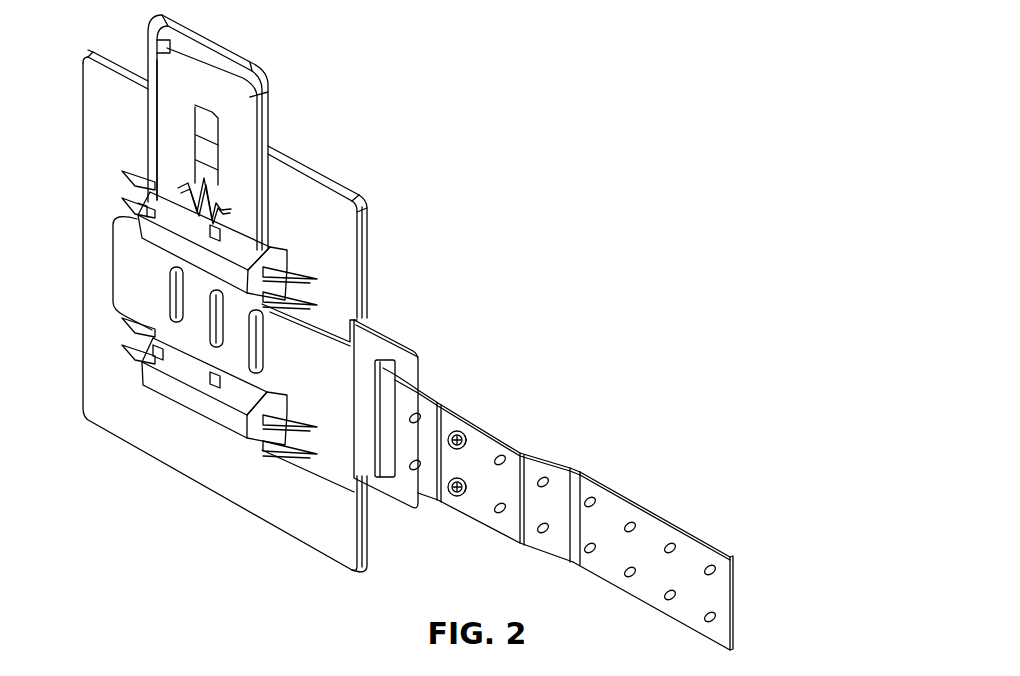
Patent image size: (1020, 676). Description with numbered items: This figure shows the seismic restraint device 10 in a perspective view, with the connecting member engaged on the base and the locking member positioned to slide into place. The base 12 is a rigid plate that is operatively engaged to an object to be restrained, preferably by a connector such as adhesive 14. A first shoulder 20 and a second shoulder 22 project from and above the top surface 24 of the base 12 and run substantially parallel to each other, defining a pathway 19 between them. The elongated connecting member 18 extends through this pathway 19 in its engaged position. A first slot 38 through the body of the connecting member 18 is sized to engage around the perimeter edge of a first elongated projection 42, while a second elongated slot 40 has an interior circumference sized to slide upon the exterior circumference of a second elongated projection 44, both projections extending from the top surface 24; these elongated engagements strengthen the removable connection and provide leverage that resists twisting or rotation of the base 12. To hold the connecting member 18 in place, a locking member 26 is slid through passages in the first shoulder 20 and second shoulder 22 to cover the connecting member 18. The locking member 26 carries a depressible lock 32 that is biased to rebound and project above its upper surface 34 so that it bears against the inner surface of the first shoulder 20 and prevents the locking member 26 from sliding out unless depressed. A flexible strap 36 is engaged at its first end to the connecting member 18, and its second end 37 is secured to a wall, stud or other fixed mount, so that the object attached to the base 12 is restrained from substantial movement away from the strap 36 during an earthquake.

The device 10 is at (540, 205).
The base 12 is at (322, 222).
The adhesive 14 is at (367, 231).
The connecting member 18 is at (398, 350).
The pathway 19 is at (133, 318).
The first shoulder 20 is at (120, 200).
The second shoulder 22 is at (262, 433).
The top surface 24 is at (217, 316).
The locking member 26 is at (259, 134).
The depressible lock 32 is at (205, 127).
The upper surface 34 is at (204, 130).
The strap 36 is at (608, 502).
The second end 37 is at (713, 560).
The first slot 38 is at (263, 363).
The second elongated slot 40 is at (217, 335).
The first elongated projection 42 is at (260, 327).
The second elongated projection 44 is at (170, 292).